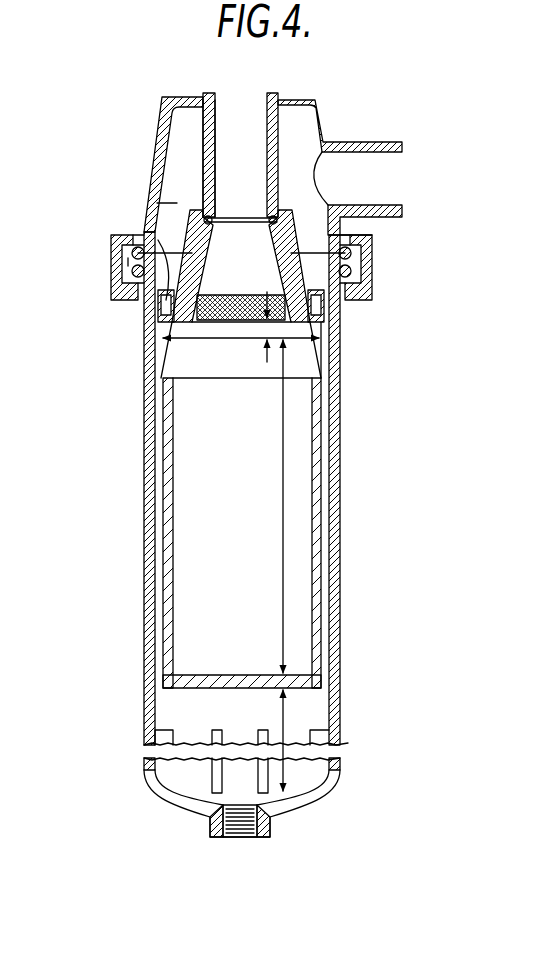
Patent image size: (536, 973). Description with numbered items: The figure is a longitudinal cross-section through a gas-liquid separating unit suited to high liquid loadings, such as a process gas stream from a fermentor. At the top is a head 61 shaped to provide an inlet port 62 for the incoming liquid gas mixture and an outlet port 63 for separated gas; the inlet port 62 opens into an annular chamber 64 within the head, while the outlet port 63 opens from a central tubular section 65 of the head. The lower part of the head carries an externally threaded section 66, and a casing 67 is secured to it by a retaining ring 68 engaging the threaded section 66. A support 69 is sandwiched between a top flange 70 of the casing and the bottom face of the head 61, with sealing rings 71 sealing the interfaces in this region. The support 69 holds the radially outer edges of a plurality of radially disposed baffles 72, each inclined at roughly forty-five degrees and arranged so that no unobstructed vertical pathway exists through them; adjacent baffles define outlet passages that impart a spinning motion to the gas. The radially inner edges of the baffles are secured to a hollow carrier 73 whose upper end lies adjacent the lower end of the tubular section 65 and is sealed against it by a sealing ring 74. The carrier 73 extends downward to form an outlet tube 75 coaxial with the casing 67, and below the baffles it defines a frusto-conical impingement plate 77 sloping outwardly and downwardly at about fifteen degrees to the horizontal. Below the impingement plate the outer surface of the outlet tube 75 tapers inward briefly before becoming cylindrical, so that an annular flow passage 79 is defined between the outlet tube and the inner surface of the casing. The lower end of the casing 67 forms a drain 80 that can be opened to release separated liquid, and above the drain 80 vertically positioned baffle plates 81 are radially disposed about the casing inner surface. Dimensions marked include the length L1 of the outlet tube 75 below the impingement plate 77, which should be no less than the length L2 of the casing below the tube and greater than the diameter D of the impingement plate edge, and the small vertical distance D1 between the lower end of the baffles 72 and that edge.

The head 61 is at (322, 98).
The inlet port 62 is at (392, 209).
The outlet port 63 is at (264, 110).
The annular chamber 64 is at (167, 192).
The central tubular section 65 is at (203, 155).
The externally threaded section 66 is at (371, 242).
The casing 67 is at (336, 521).
The retaining ring 68 is at (372, 293).
The support 69 is at (128, 264).
The top flange 70 is at (128, 284).
The sealing rings 71 is at (138, 253).
The baffles 72 is at (157, 308).
The hollow carrier 73 is at (197, 257).
The sealing ring 74 is at (270, 215).
The outlet tube 75 is at (159, 492).
The impingement plate 77 is at (323, 333).
The annular flow passage 79 is at (322, 431).
The drain 80 is at (252, 822).
The baffle plates 81 is at (318, 738).
The diameter of the impingement plate outer edge D is at (202, 340).
The vertical distance between baffles and impingement plate edge D1 is at (264, 334).
The length of the outlet tube L1 is at (283, 590).
The length of the casing below the outlet tube L2 is at (283, 712).